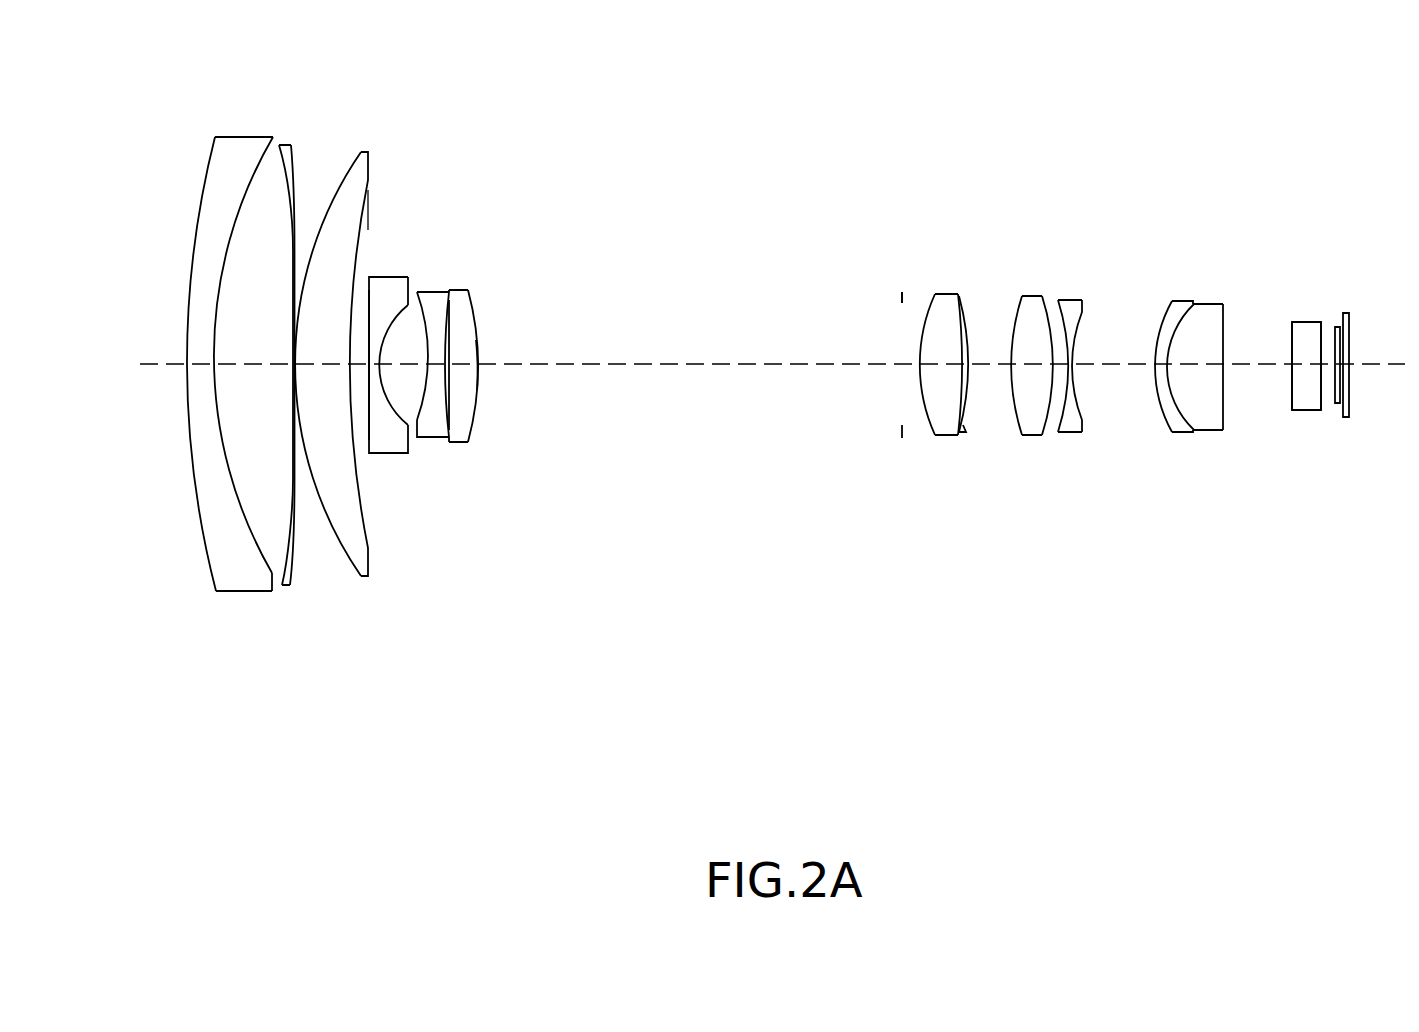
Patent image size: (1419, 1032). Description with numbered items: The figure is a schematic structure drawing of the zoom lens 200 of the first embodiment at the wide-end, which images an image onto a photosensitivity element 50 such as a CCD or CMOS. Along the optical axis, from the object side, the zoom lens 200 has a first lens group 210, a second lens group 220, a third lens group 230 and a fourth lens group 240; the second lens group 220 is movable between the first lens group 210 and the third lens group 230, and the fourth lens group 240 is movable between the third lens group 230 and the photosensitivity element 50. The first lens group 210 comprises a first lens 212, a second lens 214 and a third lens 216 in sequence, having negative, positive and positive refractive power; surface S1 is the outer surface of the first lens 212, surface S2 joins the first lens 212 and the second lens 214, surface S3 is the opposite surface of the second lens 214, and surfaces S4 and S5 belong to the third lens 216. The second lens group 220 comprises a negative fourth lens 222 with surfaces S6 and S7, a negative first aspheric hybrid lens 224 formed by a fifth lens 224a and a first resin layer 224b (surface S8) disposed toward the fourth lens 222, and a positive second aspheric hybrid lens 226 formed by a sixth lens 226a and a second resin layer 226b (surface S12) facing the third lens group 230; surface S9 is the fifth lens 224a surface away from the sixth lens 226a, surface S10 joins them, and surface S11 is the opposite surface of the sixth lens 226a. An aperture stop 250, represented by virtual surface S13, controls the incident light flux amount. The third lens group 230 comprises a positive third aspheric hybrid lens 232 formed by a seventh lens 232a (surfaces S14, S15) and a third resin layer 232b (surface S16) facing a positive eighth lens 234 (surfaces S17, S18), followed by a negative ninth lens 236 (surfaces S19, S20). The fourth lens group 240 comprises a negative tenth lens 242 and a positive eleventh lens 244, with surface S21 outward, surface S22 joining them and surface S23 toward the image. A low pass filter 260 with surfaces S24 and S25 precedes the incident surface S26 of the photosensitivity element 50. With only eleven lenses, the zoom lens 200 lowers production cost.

The zoom lens 200 is at (1165, 767).
The first lens group 210 is at (383, 702).
The first lens 212 is at (230, 580).
The second lens 214 is at (283, 590).
The third lens 216 is at (347, 563).
The second lens group 220 is at (717, 702).
The fourth lens 222 is at (390, 437).
The first aspheric hybrid lens 224 is at (613, 642).
The fifth lens 224a is at (436, 428).
The first resin layer 224b is at (422, 425).
The second aspheric hybrid lens 226 is at (768, 642).
The sixth lens 226a is at (457, 428).
The second resin layer 226b is at (477, 418).
The third lens group 230 is at (1068, 702).
The third aspheric hybrid lens 232 is at (933, 642).
The seventh lens 232a is at (947, 425).
The third resin layer 232b is at (962, 420).
The eighth lens 234 is at (1035, 425).
The ninth lens 236 is at (1073, 428).
The fourth lens group 240 is at (1198, 702).
The tenth lens 242 is at (1183, 423).
The eleventh lens 244 is at (1215, 420).
The aperture stop 250 is at (902, 438).
The low pass filter 260 is at (1308, 400).
The photosensitivity element 50 is at (1338, 400).
The surface S1 is at (208, 174).
The surface S2 is at (258, 178).
The surface S3 is at (295, 175).
The surface S4 is at (334, 188).
The surface S5 is at (368, 212).
The surface S6 is at (373, 300).
The surface S7 is at (400, 303).
The surface S8 is at (425, 303).
The surface S9 is at (430, 325).
The surface S10 is at (450, 343).
The surface S11 is at (485, 343).
The surface S12 is at (480, 365).
The virtual surface S13 is at (897, 297).
The surface S14 is at (925, 312).
The surface S15 is at (957, 333).
The surface S16 is at (967, 338).
The surface S17 is at (1017, 324).
The surface S18 is at (1046, 338).
The surface S19 is at (1060, 323).
The surface S20 is at (1073, 348).
The surface S21 is at (1160, 312).
The surface S22 is at (1185, 329).
The surface S23 is at (1228, 317).
The surface S24 is at (1288, 338).
The surface S25 is at (1317, 340).
The incident surface S26 is at (1332, 330).